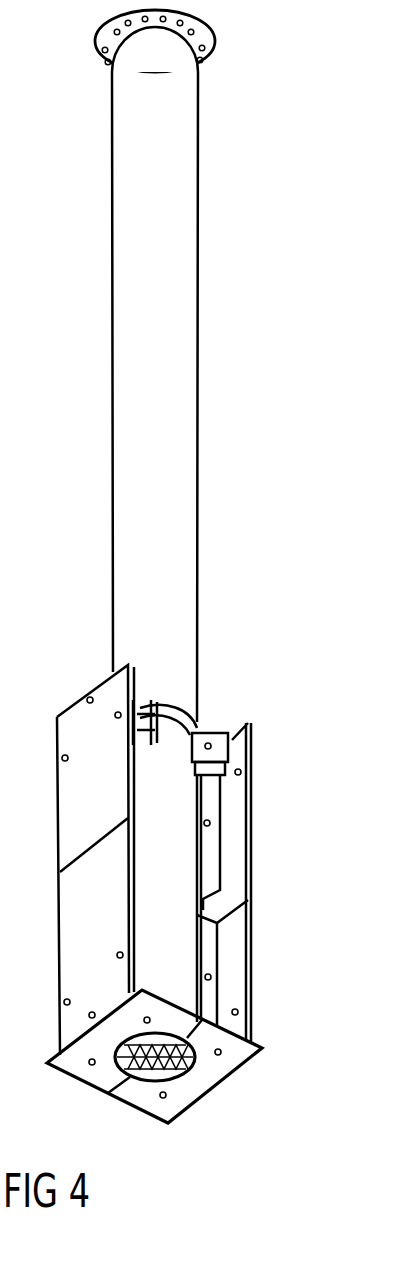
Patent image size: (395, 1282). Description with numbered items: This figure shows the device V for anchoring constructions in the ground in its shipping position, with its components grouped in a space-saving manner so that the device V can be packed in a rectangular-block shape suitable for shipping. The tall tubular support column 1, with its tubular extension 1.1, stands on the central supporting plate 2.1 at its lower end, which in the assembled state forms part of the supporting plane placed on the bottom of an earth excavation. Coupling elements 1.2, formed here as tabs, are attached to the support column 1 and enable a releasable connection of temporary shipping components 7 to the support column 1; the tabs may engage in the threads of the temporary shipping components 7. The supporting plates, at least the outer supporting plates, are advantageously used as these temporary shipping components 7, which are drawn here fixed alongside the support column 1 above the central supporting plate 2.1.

The device for anchoring constructions in the ground V is at (202, 566).
The tubular support column 1 is at (200, 366).
The tubular extension 1.1 is at (182, 382).
The coupling elements 1.2 is at (230, 741).
The temporary shipping components 7 is at (237, 849).
The central supporting plate 2.1 is at (235, 1057).